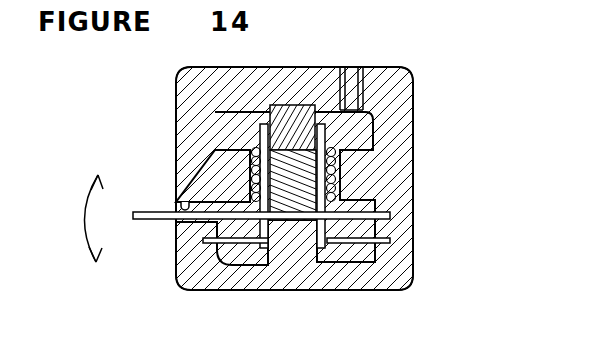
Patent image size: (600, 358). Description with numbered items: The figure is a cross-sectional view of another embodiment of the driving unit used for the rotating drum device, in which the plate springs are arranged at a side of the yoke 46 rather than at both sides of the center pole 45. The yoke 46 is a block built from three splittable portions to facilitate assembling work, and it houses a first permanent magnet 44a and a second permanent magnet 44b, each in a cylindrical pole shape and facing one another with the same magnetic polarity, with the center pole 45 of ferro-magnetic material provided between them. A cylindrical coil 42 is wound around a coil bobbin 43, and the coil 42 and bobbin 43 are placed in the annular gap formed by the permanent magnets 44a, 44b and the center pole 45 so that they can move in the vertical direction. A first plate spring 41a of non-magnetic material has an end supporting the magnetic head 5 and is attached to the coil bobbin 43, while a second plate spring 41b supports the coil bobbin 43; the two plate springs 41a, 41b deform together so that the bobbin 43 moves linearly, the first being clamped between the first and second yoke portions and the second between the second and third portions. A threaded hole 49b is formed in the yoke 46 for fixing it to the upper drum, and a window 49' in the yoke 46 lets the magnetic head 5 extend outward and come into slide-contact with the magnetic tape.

The magnetic head 5 is at (150, 212).
The first plate spring 41a is at (413, 180).
The second plate spring 41b is at (413, 236).
The cylindrical coil 42 is at (338, 148).
The coil bobbin 43 is at (250, 246).
The first permanent magnet 44a is at (300, 220).
The second permanent magnet 44b is at (297, 106).
The center pole 45 is at (255, 150).
The yoke 46 is at (397, 256).
The window 49' is at (156, 182).
The threaded hole 49b is at (352, 108).